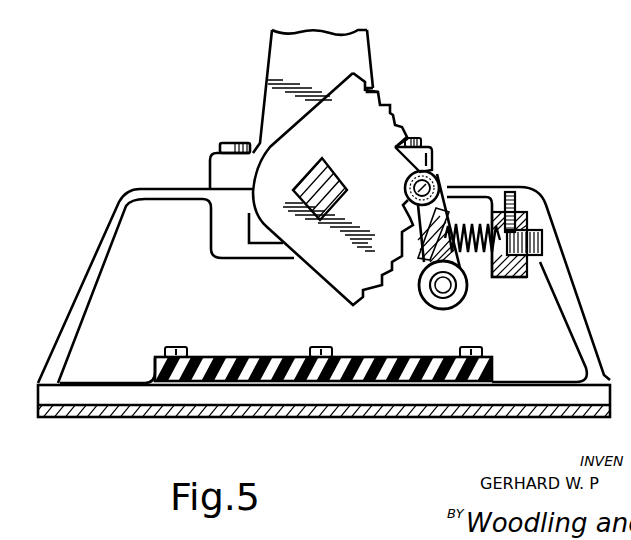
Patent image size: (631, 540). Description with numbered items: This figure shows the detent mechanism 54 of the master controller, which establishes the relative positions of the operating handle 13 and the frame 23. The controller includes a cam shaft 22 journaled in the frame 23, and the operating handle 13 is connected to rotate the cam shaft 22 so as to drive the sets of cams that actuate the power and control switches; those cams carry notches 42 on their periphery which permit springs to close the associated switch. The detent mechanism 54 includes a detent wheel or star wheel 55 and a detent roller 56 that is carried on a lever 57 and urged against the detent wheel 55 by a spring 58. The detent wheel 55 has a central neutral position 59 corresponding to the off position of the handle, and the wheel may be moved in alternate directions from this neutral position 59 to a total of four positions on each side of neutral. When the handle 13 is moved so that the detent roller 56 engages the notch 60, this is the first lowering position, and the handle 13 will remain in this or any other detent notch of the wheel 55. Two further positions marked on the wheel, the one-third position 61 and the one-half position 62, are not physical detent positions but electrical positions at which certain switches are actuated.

The operating handle 13 is at (363, 53).
The cam shaft 22 is at (310, 172).
The frame 23 is at (78, 417).
The notches 42 is at (258, 356).
The detent mechanism 54 is at (378, 118).
The detent wheel 55 is at (376, 90).
The detent roller 56 is at (440, 180).
The lever 57 is at (424, 290).
The spring 58 is at (480, 235).
The neutral position 59 is at (405, 192).
The notch 60 is at (397, 146).
The one-third position 61 is at (410, 170).
The one-half position 62 is at (416, 162).